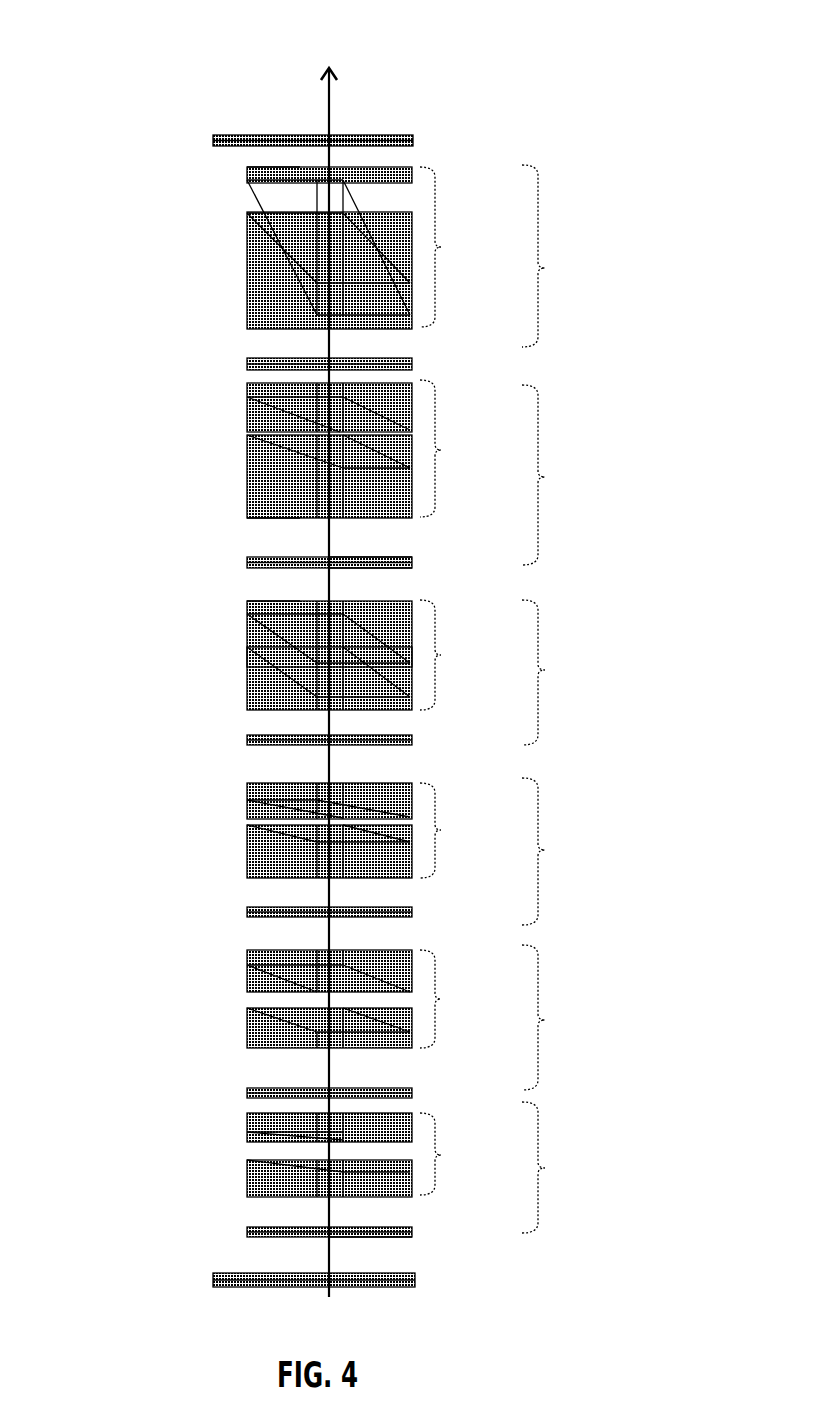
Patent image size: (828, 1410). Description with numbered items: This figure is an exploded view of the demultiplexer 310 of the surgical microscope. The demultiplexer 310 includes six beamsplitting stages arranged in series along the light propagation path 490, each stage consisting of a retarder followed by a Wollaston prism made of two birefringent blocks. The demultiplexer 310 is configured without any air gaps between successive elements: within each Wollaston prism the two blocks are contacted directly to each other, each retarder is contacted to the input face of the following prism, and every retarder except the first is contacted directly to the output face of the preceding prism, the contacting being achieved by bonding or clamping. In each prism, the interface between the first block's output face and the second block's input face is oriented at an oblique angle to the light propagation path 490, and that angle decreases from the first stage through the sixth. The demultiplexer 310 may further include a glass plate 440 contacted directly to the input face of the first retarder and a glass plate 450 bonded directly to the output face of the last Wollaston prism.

The demultiplexer 310 is at (183, 83).
The light propagation path 490 is at (332, 95).
The glass plate 450 is at (213, 140).
The glass plate 440 is at (213, 1280).